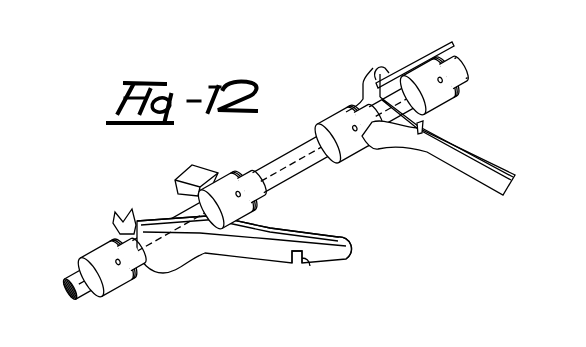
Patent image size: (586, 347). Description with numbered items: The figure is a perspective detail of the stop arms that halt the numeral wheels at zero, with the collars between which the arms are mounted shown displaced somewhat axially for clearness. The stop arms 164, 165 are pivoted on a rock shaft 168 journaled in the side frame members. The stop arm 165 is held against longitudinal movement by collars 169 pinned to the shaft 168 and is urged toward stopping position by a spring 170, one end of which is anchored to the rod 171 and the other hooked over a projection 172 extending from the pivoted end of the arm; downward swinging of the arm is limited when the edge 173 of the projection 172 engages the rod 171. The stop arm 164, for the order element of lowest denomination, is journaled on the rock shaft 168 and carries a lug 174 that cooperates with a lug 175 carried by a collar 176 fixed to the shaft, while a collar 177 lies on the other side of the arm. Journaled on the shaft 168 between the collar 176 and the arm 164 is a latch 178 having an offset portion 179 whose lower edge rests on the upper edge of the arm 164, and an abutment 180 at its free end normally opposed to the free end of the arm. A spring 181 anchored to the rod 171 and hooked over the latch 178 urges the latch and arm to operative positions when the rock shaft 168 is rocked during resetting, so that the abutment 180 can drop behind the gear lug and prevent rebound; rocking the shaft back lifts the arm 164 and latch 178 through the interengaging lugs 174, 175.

The stop arm 164 is at (244, 246).
The stop arm 165 is at (457, 161).
The rock shaft 168 is at (62, 290).
The collars 169 is at (343, 112).
The spring 170 is at (427, 124).
The rod 171 is at (413, 64).
The projection 172 is at (362, 72).
The edge 173 is at (377, 70).
The lug 174 is at (116, 219).
The lug 175 is at (178, 182).
The collar 176 is at (230, 173).
The collar 177 is at (80, 262).
The latch 178 is at (278, 228).
The offset portion 179 is at (291, 233).
The abutment 180 is at (298, 264).
The spring 181 is at (220, 227).